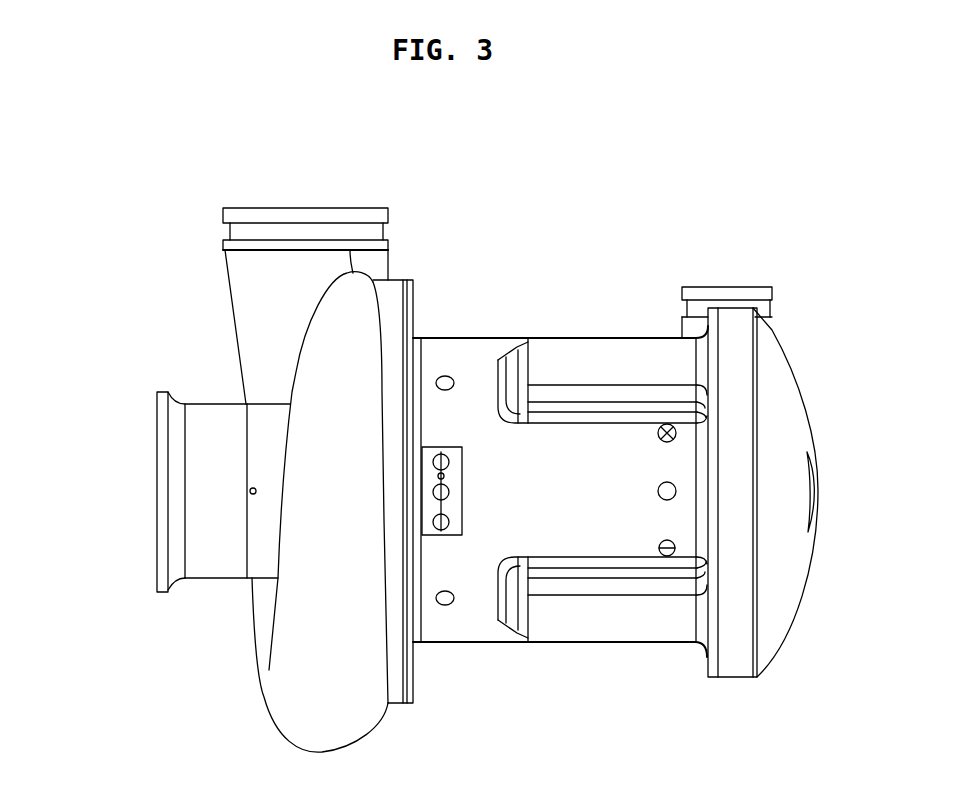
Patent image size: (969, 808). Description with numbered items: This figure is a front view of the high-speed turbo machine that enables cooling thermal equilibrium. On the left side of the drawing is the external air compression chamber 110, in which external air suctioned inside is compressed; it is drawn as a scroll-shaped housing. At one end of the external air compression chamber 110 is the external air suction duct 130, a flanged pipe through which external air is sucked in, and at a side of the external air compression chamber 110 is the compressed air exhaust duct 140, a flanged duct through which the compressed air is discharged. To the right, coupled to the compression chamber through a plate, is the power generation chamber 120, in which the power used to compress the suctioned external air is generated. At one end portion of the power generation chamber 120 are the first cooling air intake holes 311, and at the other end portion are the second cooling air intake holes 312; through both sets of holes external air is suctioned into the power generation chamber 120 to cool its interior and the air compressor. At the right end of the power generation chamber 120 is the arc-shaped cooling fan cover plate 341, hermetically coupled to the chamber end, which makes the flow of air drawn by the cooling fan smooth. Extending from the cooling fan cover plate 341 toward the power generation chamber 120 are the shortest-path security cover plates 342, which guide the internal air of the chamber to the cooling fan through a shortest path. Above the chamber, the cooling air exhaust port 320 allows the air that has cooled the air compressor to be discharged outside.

The external air compression chamber 110 is at (398, 278).
The power generation chamber 120 is at (512, 336).
The external air suction duct 130 is at (157, 490).
The compressed air exhaust duct 140 is at (303, 208).
The first cooling air intake holes 311 is at (444, 376).
The second cooling air intake holes 312 is at (666, 424).
The cooling air exhaust port 320 is at (726, 287).
The cooling fan cover plate 341 is at (797, 375).
The shortest-path security cover plate 342 is at (590, 626).